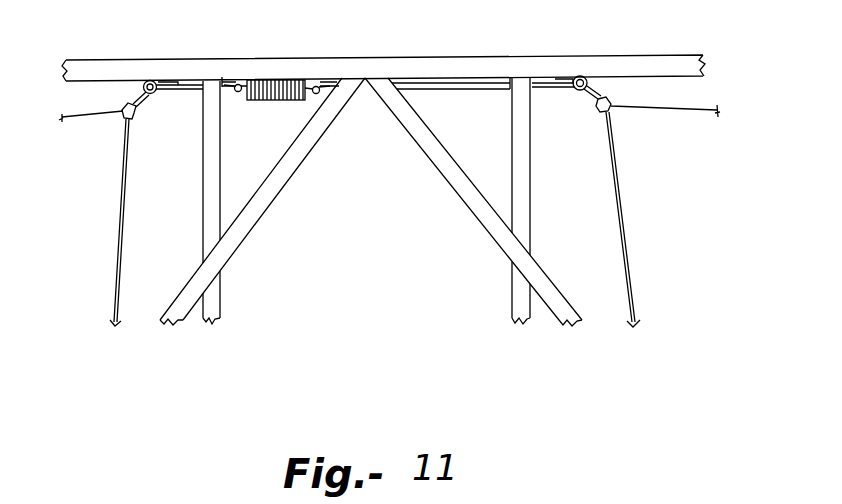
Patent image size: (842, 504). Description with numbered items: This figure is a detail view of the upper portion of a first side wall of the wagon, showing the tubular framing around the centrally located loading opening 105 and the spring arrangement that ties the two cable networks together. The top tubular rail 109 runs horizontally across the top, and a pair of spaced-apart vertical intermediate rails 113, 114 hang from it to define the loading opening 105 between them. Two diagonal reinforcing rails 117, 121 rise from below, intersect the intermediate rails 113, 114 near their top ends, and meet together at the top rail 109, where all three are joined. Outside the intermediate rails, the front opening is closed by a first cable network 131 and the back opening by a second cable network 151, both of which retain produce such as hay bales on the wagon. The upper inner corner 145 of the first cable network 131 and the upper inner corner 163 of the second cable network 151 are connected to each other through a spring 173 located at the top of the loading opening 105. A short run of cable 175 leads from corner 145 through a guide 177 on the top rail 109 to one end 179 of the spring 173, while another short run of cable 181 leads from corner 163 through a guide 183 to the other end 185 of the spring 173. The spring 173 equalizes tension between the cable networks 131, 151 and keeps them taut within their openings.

The loading opening 105 is at (376, 219).
The top tubular rail 109 is at (680, 55).
The vertical intermediate rail 113 is at (222, 297).
The vertical intermediate rail 114 is at (532, 173).
The diagonal reinforcing rail 117 is at (273, 206).
The diagonal reinforcing rail 121 is at (553, 278).
The first cable network 131 is at (110, 217).
The corner of the first cable network 145 is at (126, 104).
The second cable network 151 is at (637, 193).
The corner of the second cable network 163 is at (611, 110).
The spring 173 is at (290, 100).
The short run of cable 175 is at (168, 97).
The guide 177 is at (163, 80).
The end of spring 179 is at (240, 83).
The short run of cable 181 is at (463, 91).
The guide 183 is at (587, 77).
The end of spring 185 is at (317, 86).